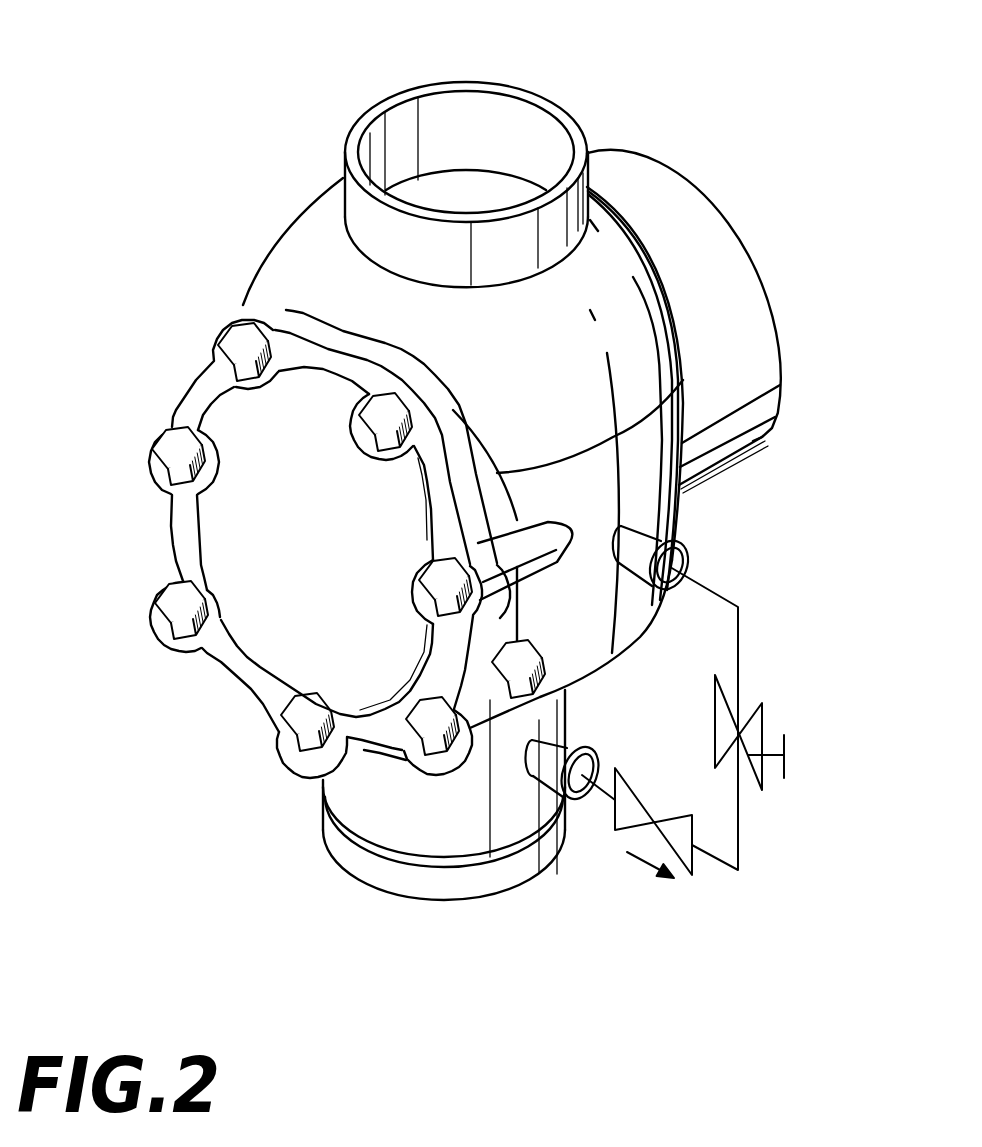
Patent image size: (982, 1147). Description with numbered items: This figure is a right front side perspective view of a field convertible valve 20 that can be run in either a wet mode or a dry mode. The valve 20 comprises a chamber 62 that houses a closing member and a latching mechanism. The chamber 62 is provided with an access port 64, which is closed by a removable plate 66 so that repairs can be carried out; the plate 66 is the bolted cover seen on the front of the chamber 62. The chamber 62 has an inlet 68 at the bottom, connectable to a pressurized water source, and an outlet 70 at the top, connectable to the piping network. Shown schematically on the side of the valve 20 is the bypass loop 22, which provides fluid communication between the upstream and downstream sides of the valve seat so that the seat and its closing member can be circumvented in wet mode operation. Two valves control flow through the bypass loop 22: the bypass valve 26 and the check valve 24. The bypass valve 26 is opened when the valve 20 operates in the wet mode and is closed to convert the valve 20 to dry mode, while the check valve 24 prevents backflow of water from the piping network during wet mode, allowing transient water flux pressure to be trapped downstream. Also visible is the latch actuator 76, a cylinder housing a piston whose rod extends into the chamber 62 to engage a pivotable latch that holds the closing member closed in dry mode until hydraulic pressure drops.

The field convertible valve 20 is at (622, 247).
The bypass loop 22 is at (725, 590).
The check valve 24 is at (692, 862).
The bypass valve 26 is at (753, 698).
The chamber 62 is at (478, 185).
The access port 64 is at (245, 305).
The removable plate 66 is at (233, 536).
The inlet 68 is at (472, 890).
The outlet 70 is at (388, 107).
The latch actuator 76 is at (755, 315).